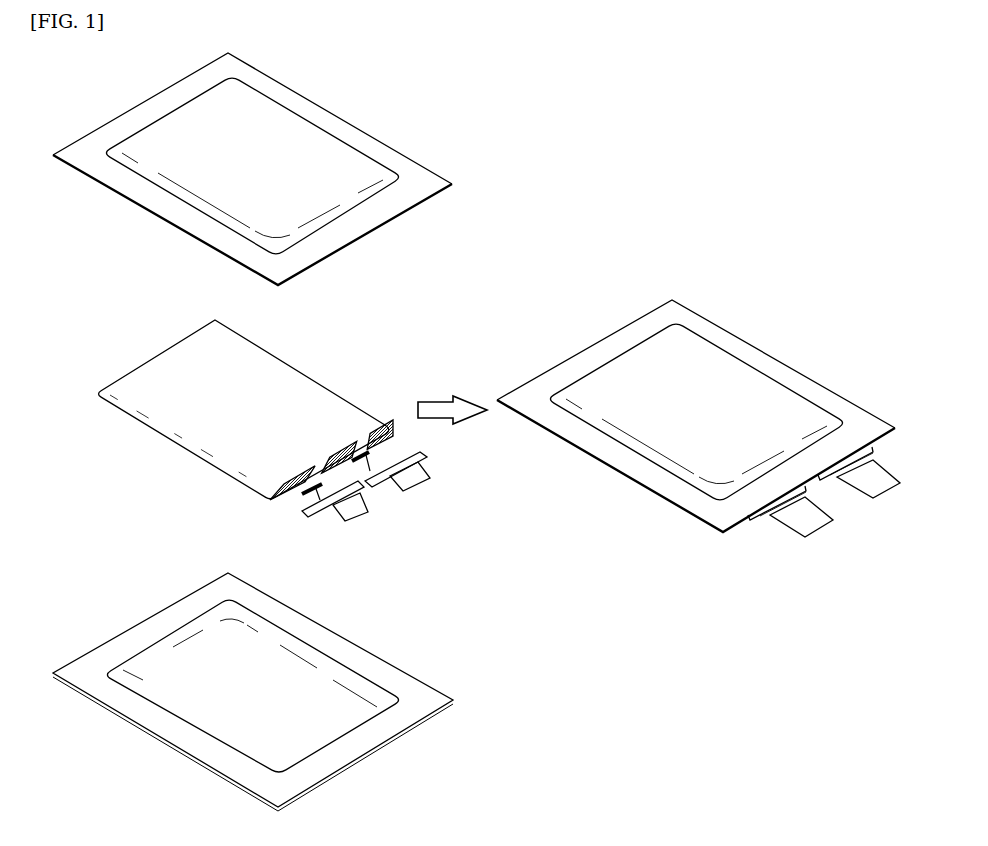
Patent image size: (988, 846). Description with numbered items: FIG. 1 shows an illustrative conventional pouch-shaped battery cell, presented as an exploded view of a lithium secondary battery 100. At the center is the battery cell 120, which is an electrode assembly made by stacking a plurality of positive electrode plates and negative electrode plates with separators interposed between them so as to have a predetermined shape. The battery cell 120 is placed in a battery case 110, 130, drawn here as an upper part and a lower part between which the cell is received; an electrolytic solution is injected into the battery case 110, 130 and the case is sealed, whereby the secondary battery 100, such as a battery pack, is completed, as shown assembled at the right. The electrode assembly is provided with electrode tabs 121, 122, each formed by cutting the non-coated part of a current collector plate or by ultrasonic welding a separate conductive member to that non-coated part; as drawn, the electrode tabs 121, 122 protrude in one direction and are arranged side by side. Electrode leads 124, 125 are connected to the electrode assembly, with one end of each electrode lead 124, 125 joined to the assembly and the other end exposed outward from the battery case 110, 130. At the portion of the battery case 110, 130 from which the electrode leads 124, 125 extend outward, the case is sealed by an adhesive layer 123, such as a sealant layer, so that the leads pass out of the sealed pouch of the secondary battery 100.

The secondary battery 100 is at (700, 417).
The battery case 110 is at (441, 177).
The battery cell 120 is at (293, 418).
The electrode tab 121 is at (371, 440).
The electrode tab 122 is at (300, 482).
The adhesive layer 123 is at (409, 466).
The electrode lead 124 is at (419, 480).
The electrode lead 125 is at (334, 514).
The battery case 130 is at (407, 677).